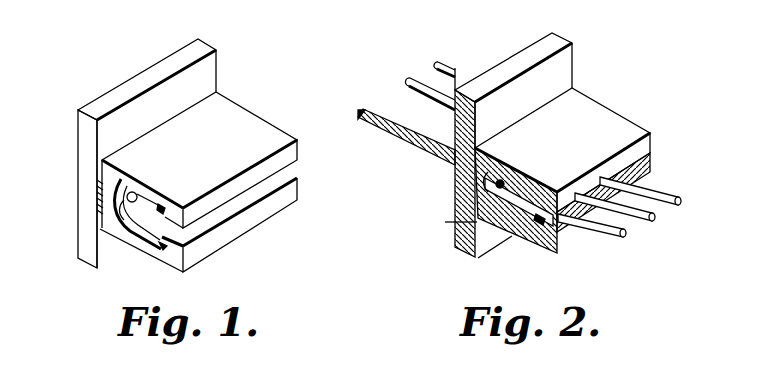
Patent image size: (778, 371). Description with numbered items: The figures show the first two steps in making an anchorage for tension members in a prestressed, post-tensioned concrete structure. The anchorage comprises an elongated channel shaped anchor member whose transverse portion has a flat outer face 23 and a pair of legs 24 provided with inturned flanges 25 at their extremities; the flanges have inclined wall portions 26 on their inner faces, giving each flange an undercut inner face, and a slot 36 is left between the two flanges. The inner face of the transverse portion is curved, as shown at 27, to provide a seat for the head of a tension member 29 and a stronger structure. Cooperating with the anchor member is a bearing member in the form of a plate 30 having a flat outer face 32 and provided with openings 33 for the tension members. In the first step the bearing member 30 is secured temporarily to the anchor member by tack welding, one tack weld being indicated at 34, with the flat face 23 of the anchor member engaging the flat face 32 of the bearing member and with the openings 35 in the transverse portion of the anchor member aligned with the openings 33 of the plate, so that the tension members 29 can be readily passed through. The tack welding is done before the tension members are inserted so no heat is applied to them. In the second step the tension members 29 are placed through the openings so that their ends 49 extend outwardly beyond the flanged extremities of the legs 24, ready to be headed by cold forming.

In FIG. 1, the flat outer face 23 is at (155, 132).
In FIG. 2, the flat outer face 23 is at (445, 222).
In FIG. 1, the legs 24 is at (253, 127).
In FIG. 2, the legs 24 is at (597, 115).
In FIG. 1, the inturned flanges 25 is at (212, 207).
In FIG. 2, the inturned flanges 25 is at (640, 140).
In FIG. 1, the inclined wall portions 26 is at (160, 198).
In FIG. 2, the inclined wall portions 26 is at (545, 183).
In FIG. 1, the curved inner face 27 is at (122, 178).
In FIG. 2, the curved inner face 27 is at (517, 170).
In FIG. 2, the tension member 29 is at (361, 108).
In FIG. 1, the bearing member plate 30 is at (197, 47).
In FIG. 2, the bearing member plate 30 is at (550, 43).
In FIG. 1, the flat outer face of bearing member 32 is at (205, 87).
In FIG. 2, the flat outer face of bearing member 32 is at (565, 68).
In FIG. 2, the openings 33 is at (458, 187).
In FIG. 1, the tack weld 34 is at (95, 193).
In FIG. 1, the openings 35 is at (133, 205).
In FIG. 2, the openings 35 is at (483, 155).
In FIG. 1, the slot 36 is at (295, 168).
In FIG. 2, the slot 36 is at (651, 163).
In FIG. 2, the ends of tension members 49 is at (605, 242).